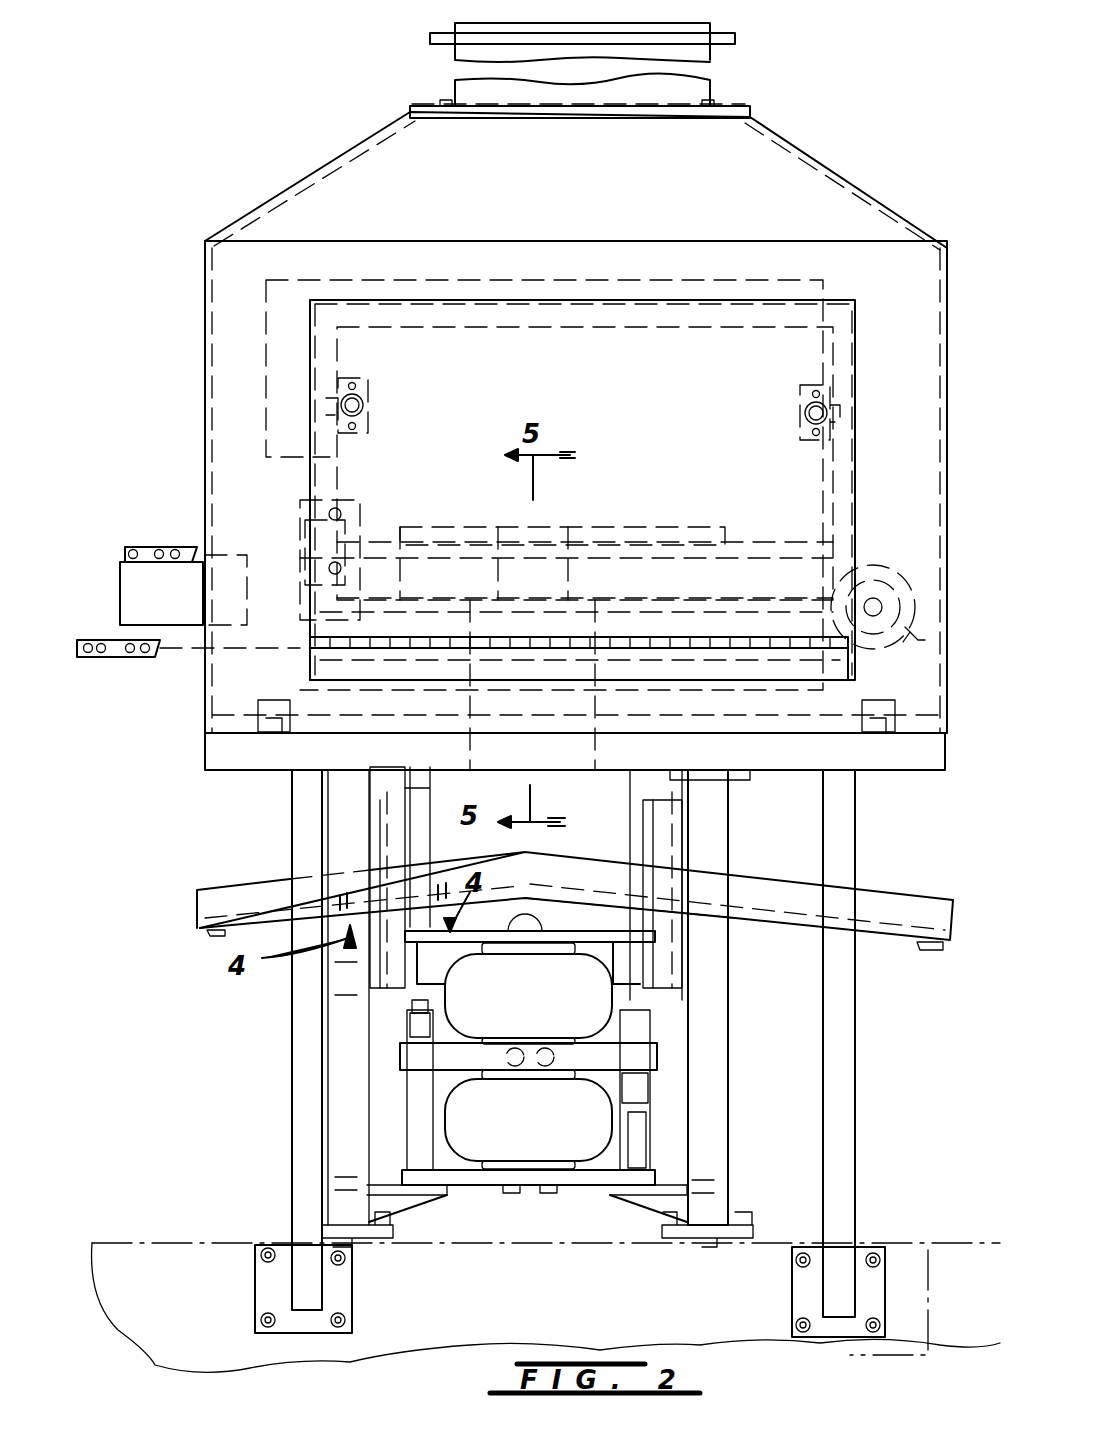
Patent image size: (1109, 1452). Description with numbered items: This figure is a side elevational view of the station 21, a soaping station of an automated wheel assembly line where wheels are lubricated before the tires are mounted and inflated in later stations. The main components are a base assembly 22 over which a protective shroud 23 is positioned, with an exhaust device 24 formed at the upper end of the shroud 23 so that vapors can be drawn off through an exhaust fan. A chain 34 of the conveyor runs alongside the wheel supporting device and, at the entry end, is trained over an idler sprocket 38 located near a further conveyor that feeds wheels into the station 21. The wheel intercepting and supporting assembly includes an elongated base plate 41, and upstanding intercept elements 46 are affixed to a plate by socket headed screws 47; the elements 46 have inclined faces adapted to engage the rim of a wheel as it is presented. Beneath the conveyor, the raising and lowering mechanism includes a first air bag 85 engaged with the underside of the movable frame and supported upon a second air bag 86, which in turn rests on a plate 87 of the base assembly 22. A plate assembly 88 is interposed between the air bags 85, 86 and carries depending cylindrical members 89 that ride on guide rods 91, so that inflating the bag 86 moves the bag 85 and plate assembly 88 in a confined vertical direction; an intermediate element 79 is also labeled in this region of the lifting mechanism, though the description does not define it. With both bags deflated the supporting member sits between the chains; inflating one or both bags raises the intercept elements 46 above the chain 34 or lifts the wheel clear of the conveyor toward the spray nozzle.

The station 21 is at (860, 156).
The base assembly 22 is at (872, 863).
The protective shroud 23 is at (885, 205).
The exhaust device 24 is at (735, 30).
The chain 34 is at (152, 545).
The idler sprocket 38 is at (880, 560).
The elongated base plate 41 is at (585, 530).
The upstanding intercept elements 46 is at (352, 490).
The socket headed screws 47 is at (570, 578).
The intermediate plate 79 is at (684, 1072).
The first air bag 85 is at (612, 995).
The second air bag 86 is at (470, 1162).
The plate 87 is at (657, 1175).
The plate assembly 88 is at (650, 1046).
The depending cylindrical members 89 is at (405, 1088).
The guide rods 91 is at (640, 1130).